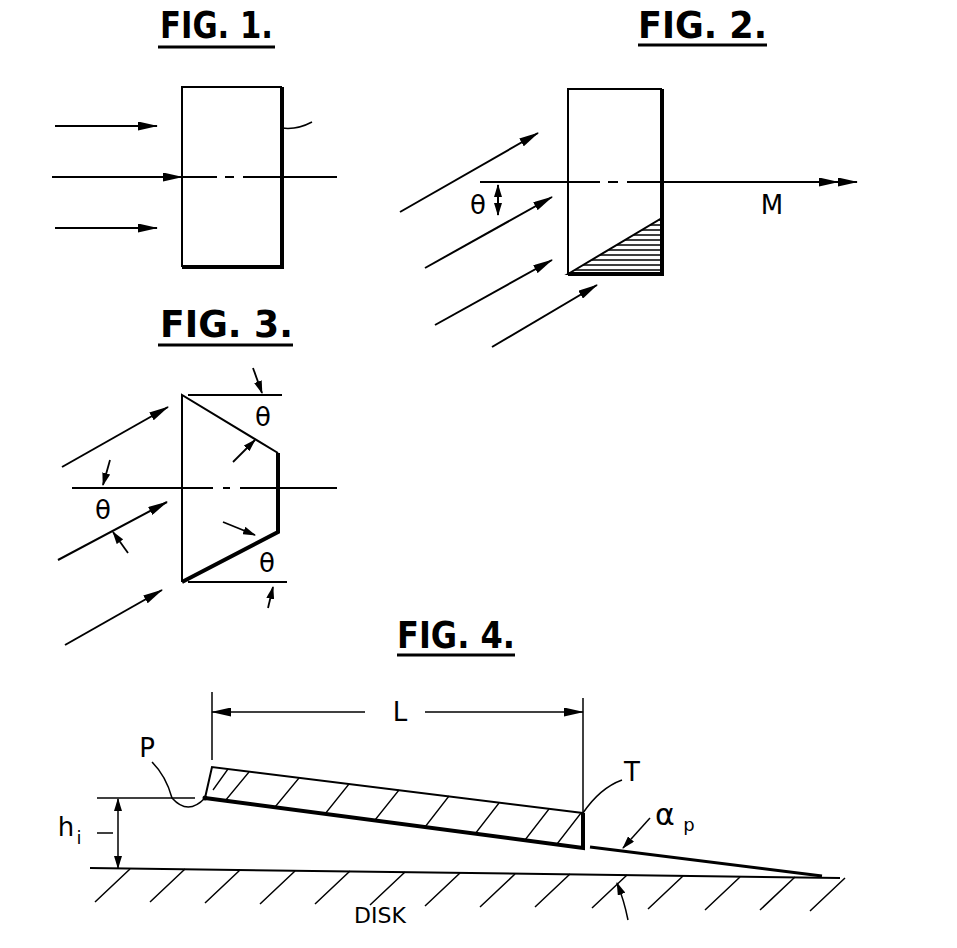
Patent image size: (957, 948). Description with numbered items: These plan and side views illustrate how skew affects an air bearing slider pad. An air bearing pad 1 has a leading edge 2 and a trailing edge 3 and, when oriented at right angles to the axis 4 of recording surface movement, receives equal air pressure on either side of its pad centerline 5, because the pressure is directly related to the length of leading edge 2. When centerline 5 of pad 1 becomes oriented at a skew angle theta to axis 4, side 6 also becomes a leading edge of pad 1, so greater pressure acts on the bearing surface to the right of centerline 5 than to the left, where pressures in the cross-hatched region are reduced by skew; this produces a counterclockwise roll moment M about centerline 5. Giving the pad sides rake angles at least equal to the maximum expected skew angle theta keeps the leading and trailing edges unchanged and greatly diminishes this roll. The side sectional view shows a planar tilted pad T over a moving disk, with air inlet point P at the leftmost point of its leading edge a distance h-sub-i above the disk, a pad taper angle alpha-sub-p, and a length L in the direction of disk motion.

In FIG. 1, the air bearing pad 1 is at (262, 110).
In FIG. 2, the air bearing pad 1 is at (650, 110).
In FIG. 3, the air bearing pad 1 is at (255, 458).
In FIG. 2, the leading edge 2 is at (568, 118).
In FIG. 1, the trailing edge 3 is at (306, 122).
In FIG. 1, the axis of recording surface movement 4 is at (83, 175).
In FIG. 2, the axis of recording surface movement 4 is at (467, 247).
In FIG. 1, the pad centerline 5 is at (292, 178).
In FIG. 2, the pad centerline 5 is at (692, 182).
In FIG. 3, the pad centerline 5 is at (307, 488).
In FIG. 2, the side 6 is at (650, 277).